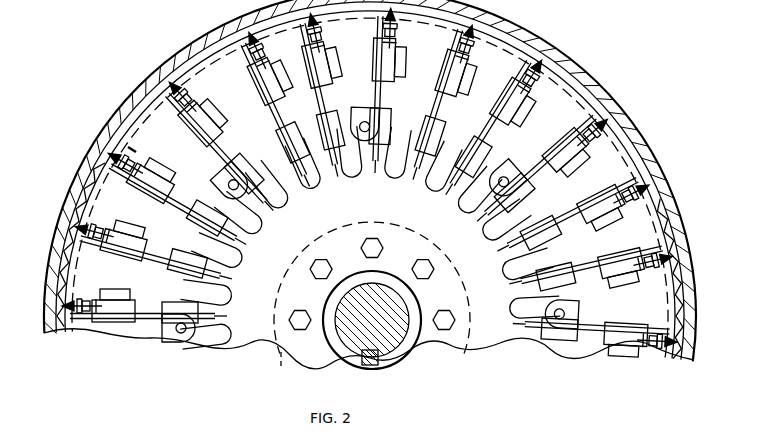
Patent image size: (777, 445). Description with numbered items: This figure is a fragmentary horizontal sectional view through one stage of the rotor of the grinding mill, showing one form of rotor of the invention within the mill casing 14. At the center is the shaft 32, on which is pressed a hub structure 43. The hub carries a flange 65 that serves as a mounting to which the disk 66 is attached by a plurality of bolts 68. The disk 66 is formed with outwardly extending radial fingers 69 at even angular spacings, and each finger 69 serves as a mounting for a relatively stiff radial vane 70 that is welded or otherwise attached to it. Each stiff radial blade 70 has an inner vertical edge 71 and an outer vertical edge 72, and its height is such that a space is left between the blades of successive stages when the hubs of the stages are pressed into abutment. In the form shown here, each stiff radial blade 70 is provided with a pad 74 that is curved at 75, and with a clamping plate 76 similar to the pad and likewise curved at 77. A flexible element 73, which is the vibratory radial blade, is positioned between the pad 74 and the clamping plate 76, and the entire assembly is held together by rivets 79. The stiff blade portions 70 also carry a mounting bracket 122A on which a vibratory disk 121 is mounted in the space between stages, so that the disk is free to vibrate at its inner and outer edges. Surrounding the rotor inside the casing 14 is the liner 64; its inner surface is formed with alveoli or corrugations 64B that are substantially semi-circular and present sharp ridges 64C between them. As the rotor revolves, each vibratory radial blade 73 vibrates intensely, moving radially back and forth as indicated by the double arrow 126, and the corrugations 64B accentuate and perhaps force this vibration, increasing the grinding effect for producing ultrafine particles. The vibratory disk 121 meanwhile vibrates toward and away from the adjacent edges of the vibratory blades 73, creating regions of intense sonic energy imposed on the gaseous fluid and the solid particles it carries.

The housing 14 is at (640, 140).
The shaft 32 is at (394, 350).
The hub structure 43 is at (418, 345).
The liner 64 is at (690, 314).
The alveoli or corrugations 64B is at (686, 244).
The sharp ridges 64C is at (687, 270).
The flange 65 is at (279, 356).
The disk 66 is at (244, 340).
The bolts 68 is at (372, 252).
The radial fingers 69 is at (406, 150).
The radial vane 70 is at (376, 88).
The inner vertical edge 71 is at (376, 172).
The outer vertical edge 72 is at (388, 38).
The flexible element 73 is at (394, 33).
The pad 74 is at (378, 68).
The curve of pad 75 is at (388, 38).
The clamping plate 76 is at (398, 60).
The curve of clamping plate 77 is at (396, 47).
The rivets 79 is at (400, 66).
The vibratory disk 121 is at (580, 94).
The mounting bracket 122A is at (358, 122).
The double arrow 126 is at (128, 149).